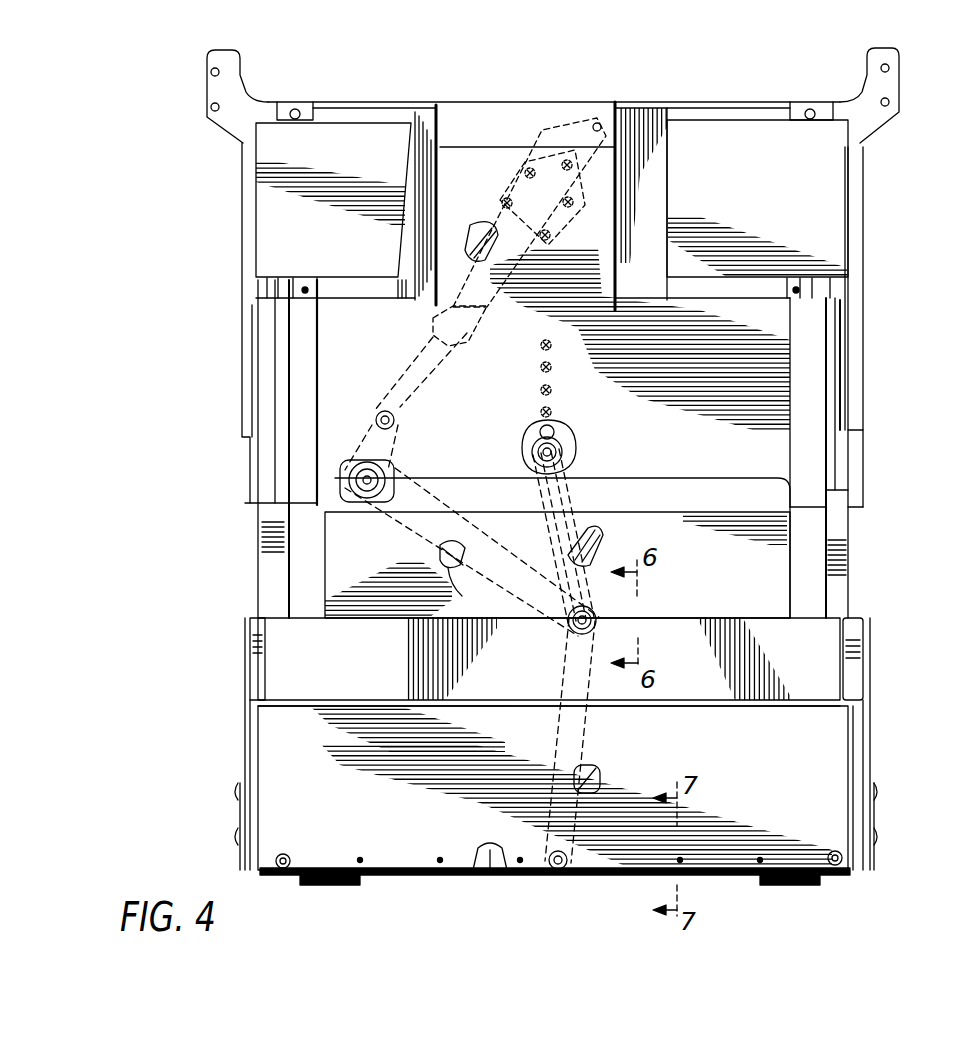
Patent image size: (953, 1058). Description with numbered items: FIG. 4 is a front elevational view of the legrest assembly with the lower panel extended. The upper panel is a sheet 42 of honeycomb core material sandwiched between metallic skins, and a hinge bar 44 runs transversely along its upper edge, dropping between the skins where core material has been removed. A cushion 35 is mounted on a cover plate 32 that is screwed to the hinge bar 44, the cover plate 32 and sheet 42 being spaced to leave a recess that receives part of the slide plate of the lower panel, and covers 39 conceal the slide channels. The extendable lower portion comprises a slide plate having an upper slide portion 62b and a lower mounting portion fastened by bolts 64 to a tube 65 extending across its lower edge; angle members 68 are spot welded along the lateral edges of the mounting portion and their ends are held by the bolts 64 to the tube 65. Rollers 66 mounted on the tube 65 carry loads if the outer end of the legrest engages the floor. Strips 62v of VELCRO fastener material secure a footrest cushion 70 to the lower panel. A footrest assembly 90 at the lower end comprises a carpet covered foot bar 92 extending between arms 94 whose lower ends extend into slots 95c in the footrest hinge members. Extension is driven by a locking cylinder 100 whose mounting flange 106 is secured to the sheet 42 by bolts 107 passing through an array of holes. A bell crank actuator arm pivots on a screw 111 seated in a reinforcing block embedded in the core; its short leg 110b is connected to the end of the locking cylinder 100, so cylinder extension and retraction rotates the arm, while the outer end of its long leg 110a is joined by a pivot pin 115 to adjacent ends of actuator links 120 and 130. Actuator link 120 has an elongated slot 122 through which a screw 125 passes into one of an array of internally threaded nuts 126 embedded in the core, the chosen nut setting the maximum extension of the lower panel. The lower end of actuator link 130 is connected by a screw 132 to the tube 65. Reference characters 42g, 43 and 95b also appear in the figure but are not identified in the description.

The cover plate 32 is at (377, 283).
The cushion 35 is at (338, 130).
The covers 39 is at (856, 385).
The sheet 42 is at (780, 451).
The upper panel portion 42g is at (485, 112).
The mounting bracket 43 is at (242, 100).
The hinge bar 44 is at (700, 105).
The upper slide portion 62b is at (776, 590).
The strips of VELCRO fastener material 62v is at (660, 493).
The bolts 64 is at (280, 868).
The tube 65 is at (492, 850).
The rollers 66 is at (345, 886).
The angle members 68 is at (258, 560).
The footrest cushion 70 is at (838, 778).
The footrest assembly 90 is at (832, 682).
The foot bar 92 is at (838, 640).
The arms 94 is at (242, 675).
The stop 95b is at (243, 862).
The slot 95c is at (952, 820).
The locking cylinder 100 is at (480, 225).
The mounting flange 106 is at (530, 170).
The bolts 107 is at (548, 236).
The long leg 110a is at (510, 614).
The short leg 110b is at (472, 442).
The screw 111 is at (375, 410).
The pivot pin 115 is at (570, 630).
The actuator link 120 is at (592, 548).
The elongated slot 122 is at (578, 470).
The screw 125 is at (553, 445).
The internally threaded nuts 126 is at (556, 390).
The actuator link 130 is at (583, 780).
The screw 132 is at (558, 875).